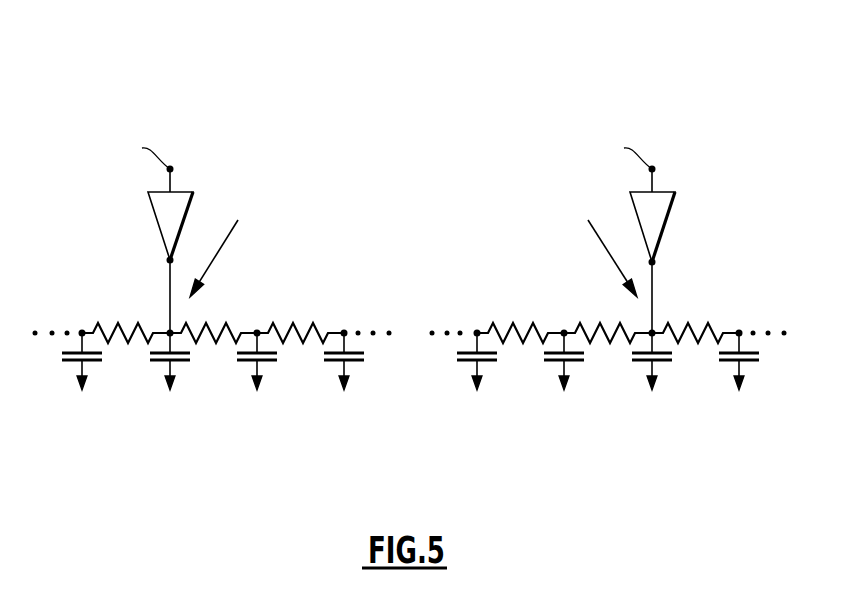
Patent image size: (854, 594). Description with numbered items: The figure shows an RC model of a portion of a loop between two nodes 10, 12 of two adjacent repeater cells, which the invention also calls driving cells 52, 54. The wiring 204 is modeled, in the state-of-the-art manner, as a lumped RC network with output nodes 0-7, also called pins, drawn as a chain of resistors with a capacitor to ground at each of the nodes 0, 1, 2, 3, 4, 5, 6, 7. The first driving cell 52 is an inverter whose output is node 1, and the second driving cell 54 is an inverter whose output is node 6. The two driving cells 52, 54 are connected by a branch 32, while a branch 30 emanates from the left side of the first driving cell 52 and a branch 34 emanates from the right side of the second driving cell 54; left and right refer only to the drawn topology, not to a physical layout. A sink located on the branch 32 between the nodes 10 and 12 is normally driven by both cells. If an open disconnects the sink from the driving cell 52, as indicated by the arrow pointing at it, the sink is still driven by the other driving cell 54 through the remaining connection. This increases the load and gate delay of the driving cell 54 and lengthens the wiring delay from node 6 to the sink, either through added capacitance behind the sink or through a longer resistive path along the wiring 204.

The wiring 204 is at (347, 103).
The node 10 is at (119, 228).
The first driving cell 52 is at (158, 225).
The node 12 is at (682, 228).
The second driving cell 54 is at (665, 222).
The branch 30 is at (122, 404).
The branch 32 is at (296, 404).
The branch 34 is at (701, 404).
The output node 0 is at (82, 344).
The output node 1 is at (170, 344).
The output node 2 is at (257, 344).
The output node 3 is at (344, 344).
The output node 4 is at (477, 344).
The output node 5 is at (564, 344).
The output node 6 is at (652, 344).
The output node 7 is at (739, 344).